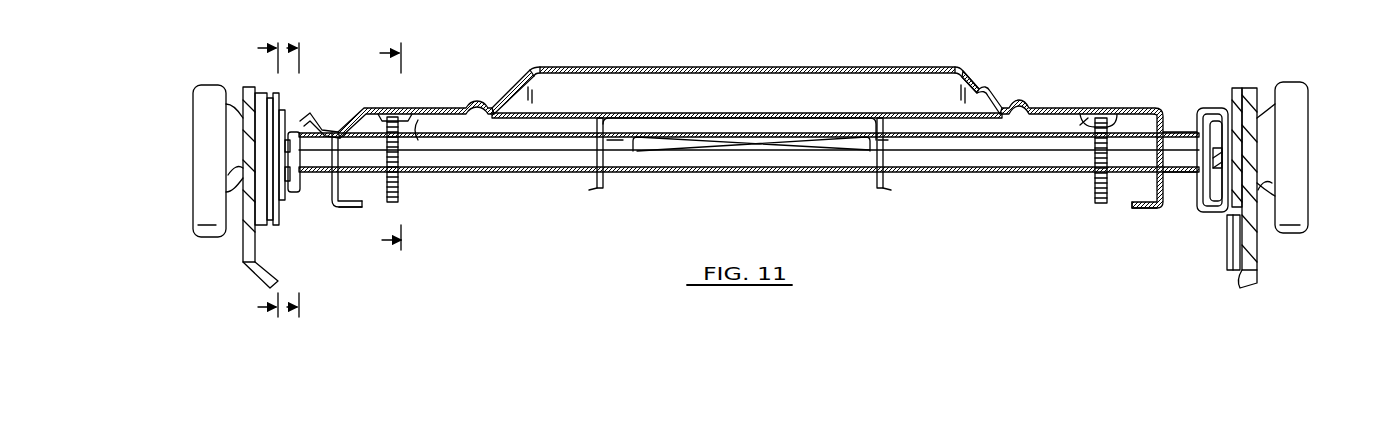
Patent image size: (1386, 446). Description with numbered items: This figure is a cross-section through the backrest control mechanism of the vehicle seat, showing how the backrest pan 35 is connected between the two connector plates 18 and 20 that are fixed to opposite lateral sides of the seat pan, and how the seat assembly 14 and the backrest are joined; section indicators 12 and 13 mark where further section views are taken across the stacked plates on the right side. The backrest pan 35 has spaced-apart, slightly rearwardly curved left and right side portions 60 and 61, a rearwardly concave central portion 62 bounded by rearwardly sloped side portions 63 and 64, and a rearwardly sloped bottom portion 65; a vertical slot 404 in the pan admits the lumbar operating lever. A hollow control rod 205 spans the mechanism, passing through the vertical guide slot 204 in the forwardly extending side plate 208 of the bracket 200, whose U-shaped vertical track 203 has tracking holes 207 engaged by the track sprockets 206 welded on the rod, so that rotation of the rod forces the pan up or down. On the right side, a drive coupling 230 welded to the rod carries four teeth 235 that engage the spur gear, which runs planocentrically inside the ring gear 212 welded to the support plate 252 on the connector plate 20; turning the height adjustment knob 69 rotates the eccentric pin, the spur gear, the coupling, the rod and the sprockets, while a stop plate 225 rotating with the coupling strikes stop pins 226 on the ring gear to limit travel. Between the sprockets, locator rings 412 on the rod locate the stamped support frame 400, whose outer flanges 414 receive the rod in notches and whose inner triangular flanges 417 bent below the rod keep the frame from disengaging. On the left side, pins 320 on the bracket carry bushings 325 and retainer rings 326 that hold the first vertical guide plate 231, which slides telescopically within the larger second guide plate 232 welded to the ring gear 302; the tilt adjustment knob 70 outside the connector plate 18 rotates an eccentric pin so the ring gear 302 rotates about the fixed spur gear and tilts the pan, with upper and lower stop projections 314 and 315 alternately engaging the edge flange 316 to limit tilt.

The height adjustment knob 69 is at (193, 100).
The tilt adjustment knob 70 is at (1308, 88).
The connector plate 20 is at (243, 249).
The connector plate 18 is at (1258, 268).
The support plate 252 is at (259, 93).
The ring gear 212 is at (272, 232).
The stop plate 225 is at (283, 220).
The stop pins 226 is at (286, 118).
The teeth 235 is at (292, 130).
The drive coupling 230 is at (306, 116).
The section line 12- 12 is at (391, 150).
The section line 13- 13 is at (298, 180).
The seat assembly 14 is at (269, 180).
The right side portion 61 is at (445, 108).
The left side portion 60 is at (1030, 108).
The bracket 200 is at (1140, 209).
The vertical slot 404 is at (515, 88).
The side portion 64 is at (528, 78).
The central portion 62 is at (738, 70).
The backrest pan 35 is at (590, 68).
The bottom portion 65 is at (585, 112).
The side portion 63 is at (985, 98).
The control rod 205 is at (521, 173).
The support frame 400 is at (806, 116).
The outer flanges 414 is at (610, 164).
The locator rings 412 is at (600, 178).
The inner triangular flanges 417 is at (602, 190).
The tracking holes 207 is at (406, 112).
The track sprockets 206 is at (400, 200).
The vertical track 203 is at (417, 128).
The vertical guide slot 204 is at (327, 172).
The side plate 208 is at (347, 209).
The bushing 325 is at (1173, 148).
The second guide plate 232 is at (1200, 110).
The first vertical guide plate 231 is at (1215, 205).
The retainer rings 326 is at (1214, 153).
The pins 320 is at (1220, 167).
The ring gear 302 is at (1238, 90).
The edge flange 316 is at (1241, 286).
The upper stop projection 314 is at (1230, 237).
The lower stop projection 315 is at (1228, 265).